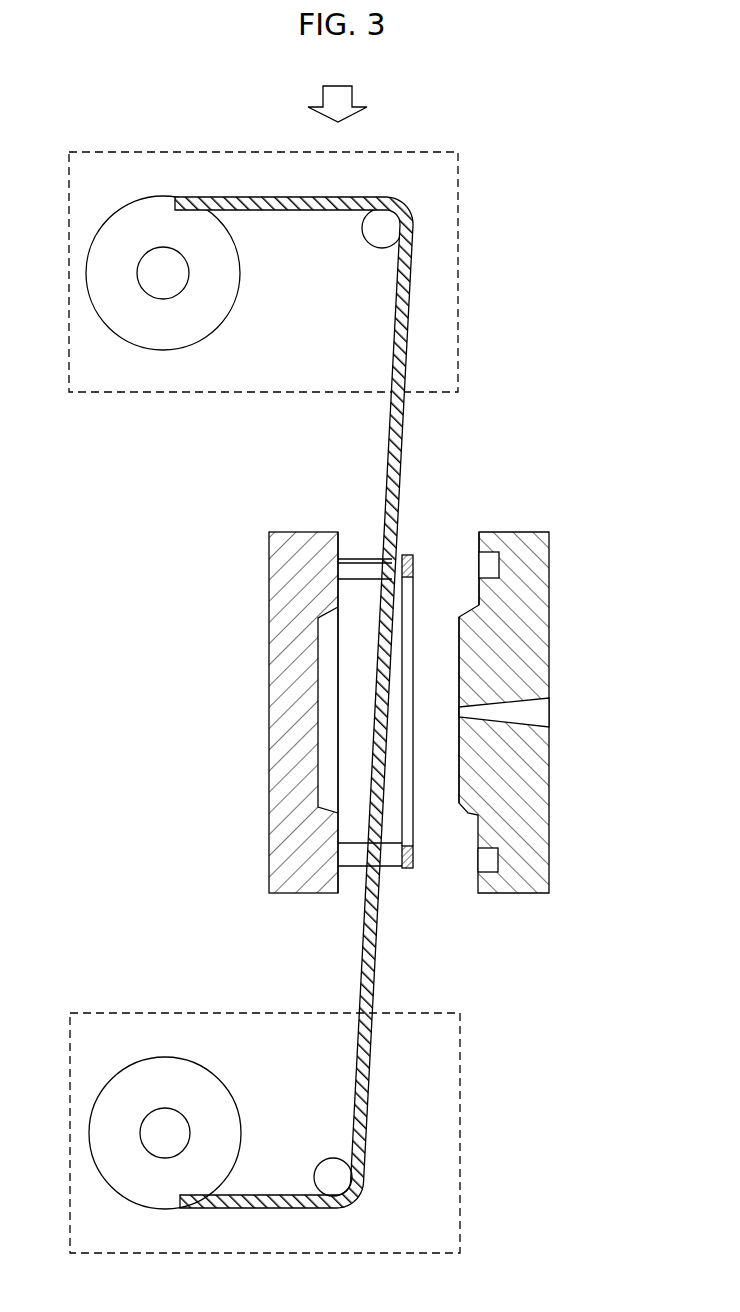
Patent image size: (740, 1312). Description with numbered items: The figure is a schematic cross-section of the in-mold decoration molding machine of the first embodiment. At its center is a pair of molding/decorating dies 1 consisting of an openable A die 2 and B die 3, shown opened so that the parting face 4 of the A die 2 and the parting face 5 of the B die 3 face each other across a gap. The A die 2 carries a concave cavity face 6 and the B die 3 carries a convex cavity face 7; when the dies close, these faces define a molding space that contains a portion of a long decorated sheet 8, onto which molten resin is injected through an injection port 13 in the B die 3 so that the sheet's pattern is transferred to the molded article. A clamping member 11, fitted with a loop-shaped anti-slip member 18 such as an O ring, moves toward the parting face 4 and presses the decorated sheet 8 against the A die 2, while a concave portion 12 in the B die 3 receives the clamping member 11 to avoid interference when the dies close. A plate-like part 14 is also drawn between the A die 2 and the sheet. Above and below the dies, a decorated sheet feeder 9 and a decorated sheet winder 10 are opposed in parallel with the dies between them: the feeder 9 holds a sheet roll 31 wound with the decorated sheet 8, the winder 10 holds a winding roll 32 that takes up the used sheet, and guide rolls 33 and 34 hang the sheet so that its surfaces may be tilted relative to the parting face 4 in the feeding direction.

The pair of molding/decorating dies 1 is at (582, 465).
The A die 2 is at (293, 679).
The B die 3 is at (520, 689).
The parting face 4 is at (339, 540).
The parting face 5 is at (474, 536).
The concave cavity face 6 is at (318, 668).
The convex cavity face 7 is at (458, 634).
The decorated sheet 8 is at (398, 452).
The decorated sheet feeder 9 is at (458, 178).
The decorated sheet winder 10 is at (460, 1028).
The clamping member 11 is at (416, 561).
The concave portion 12 is at (485, 858).
The injection port 13 is at (466, 712).
The upper plate 14 is at (370, 572).
The loop-shaped anti-slip member 18 is at (388, 862).
The sheet roll 31 is at (208, 318).
The winding roll 32 is at (208, 1088).
The guide roll 33 is at (373, 223).
The guide roll 34 is at (330, 1167).